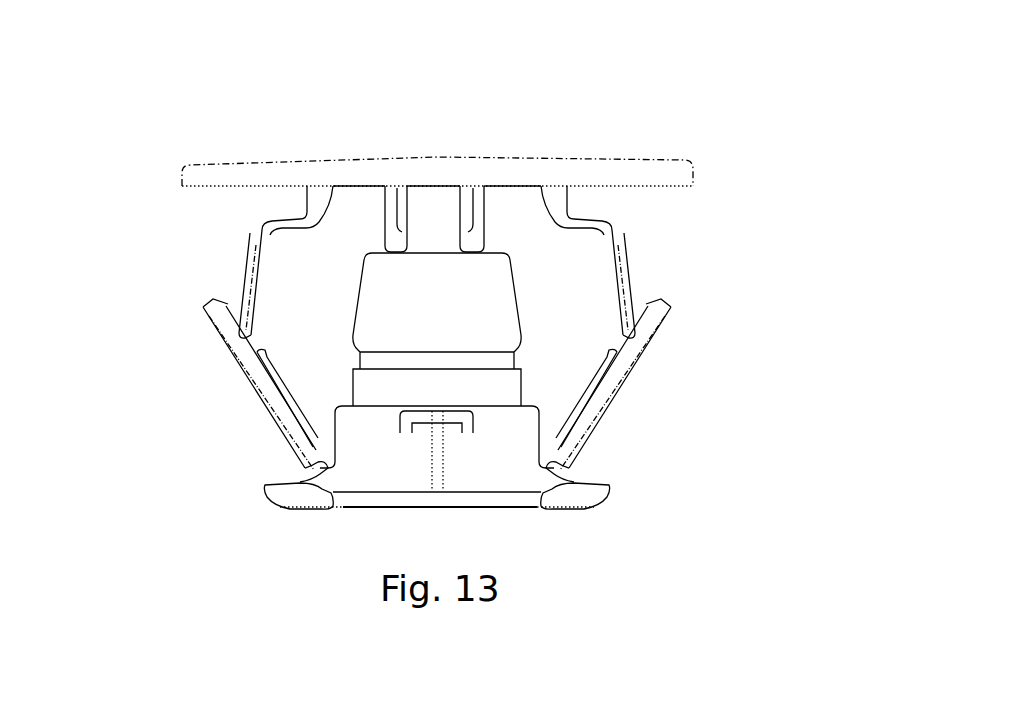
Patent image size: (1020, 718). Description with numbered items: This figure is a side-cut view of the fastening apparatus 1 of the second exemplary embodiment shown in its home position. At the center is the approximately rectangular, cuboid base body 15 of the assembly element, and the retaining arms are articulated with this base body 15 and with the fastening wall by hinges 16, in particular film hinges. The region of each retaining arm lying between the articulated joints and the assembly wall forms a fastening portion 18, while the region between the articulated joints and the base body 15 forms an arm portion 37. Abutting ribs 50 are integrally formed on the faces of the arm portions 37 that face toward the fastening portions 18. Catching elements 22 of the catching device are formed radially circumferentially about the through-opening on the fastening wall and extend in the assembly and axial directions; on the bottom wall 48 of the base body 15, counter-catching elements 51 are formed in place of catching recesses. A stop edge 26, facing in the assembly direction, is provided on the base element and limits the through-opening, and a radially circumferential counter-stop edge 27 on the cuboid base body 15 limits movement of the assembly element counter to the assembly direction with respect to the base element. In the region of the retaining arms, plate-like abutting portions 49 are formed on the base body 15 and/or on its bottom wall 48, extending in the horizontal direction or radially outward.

The fastening apparatus 1 is at (829, 74).
The base body 15 is at (494, 481).
The hinges 16 is at (262, 222).
The fastening portion 18 is at (248, 268).
The catching elements 22 is at (396, 235).
The stop edge 26 is at (347, 188).
The counter-stop edge 27 is at (342, 403).
The arm portion 37 is at (280, 423).
The bottom wall 48 is at (413, 496).
The abutting portions 49 is at (280, 493).
The abutting ribs 50 is at (280, 397).
The counter-catching elements 51 is at (405, 422).